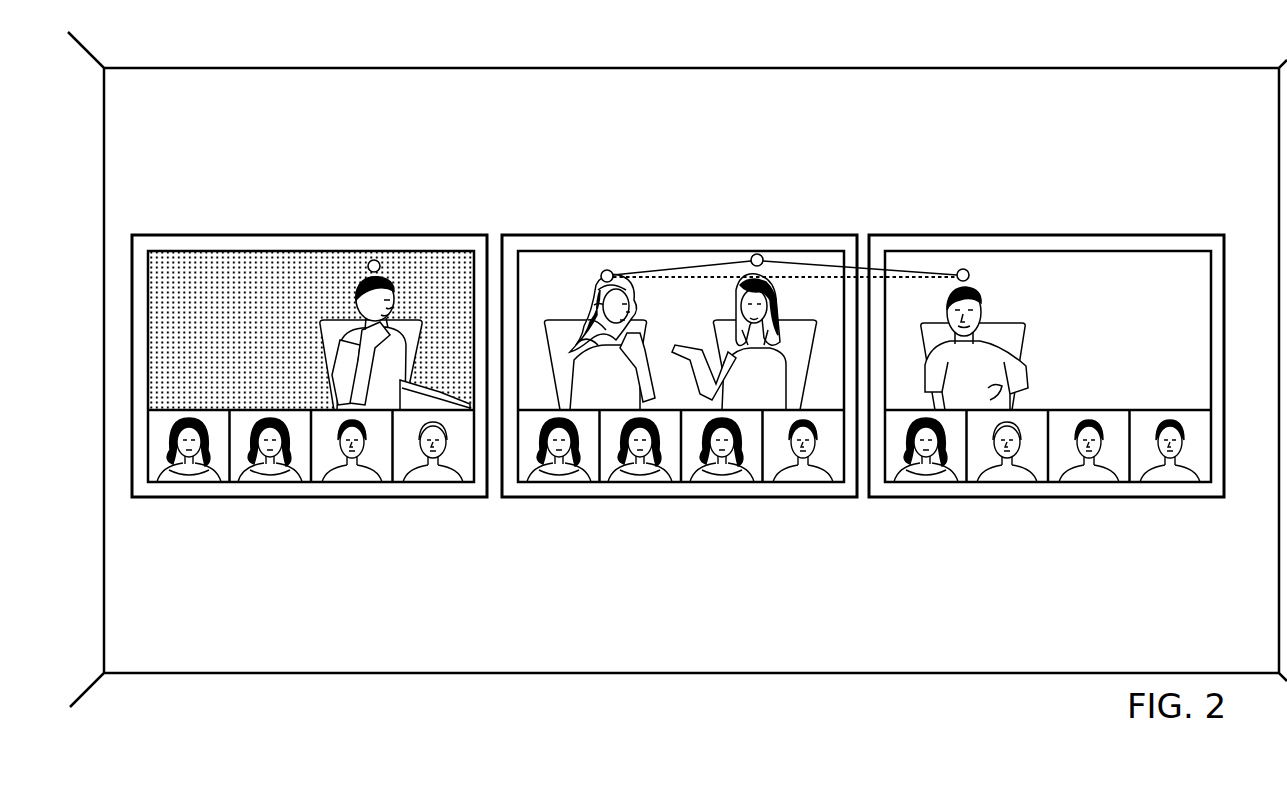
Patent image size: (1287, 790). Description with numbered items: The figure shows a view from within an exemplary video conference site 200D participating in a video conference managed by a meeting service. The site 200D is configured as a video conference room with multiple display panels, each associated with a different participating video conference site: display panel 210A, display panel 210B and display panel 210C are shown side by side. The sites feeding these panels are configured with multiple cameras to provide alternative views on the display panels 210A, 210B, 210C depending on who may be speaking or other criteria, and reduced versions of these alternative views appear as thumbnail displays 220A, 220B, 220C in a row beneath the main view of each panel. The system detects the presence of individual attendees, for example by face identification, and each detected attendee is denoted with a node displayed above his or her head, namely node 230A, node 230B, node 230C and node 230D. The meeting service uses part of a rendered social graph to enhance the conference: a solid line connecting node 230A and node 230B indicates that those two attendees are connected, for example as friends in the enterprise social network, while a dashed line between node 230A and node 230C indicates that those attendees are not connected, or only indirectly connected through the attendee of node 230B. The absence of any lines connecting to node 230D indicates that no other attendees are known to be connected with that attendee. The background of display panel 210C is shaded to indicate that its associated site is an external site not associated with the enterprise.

The video conference site (VCS) 200D is at (1205, 116).
The display panel 210A is at (1060, 224).
The display panel 210B is at (547, 223).
The display panel 210C is at (248, 224).
The thumbnail display 220A is at (1139, 472).
The thumbnail display 220B is at (782, 472).
The thumbnail display 220C is at (410, 472).
The node 230A is at (964, 268).
The node 230B is at (757, 253).
The node 230C is at (607, 269).
The node 230D is at (374, 259).